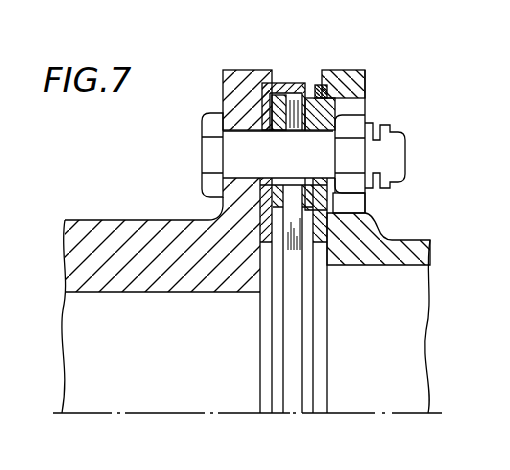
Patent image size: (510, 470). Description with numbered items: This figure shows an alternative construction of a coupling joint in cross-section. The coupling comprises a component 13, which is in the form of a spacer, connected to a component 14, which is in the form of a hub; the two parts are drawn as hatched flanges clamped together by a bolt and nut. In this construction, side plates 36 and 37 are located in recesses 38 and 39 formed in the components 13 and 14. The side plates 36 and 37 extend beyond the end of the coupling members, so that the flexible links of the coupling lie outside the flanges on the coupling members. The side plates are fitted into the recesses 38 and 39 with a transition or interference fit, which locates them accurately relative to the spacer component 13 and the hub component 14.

The component 13 is at (381, 240).
The component 14 is at (106, 231).
The side plate 36 is at (276, 86).
The side plate 37 is at (324, 88).
The recess 38 is at (258, 99).
The recess 39 is at (334, 90).